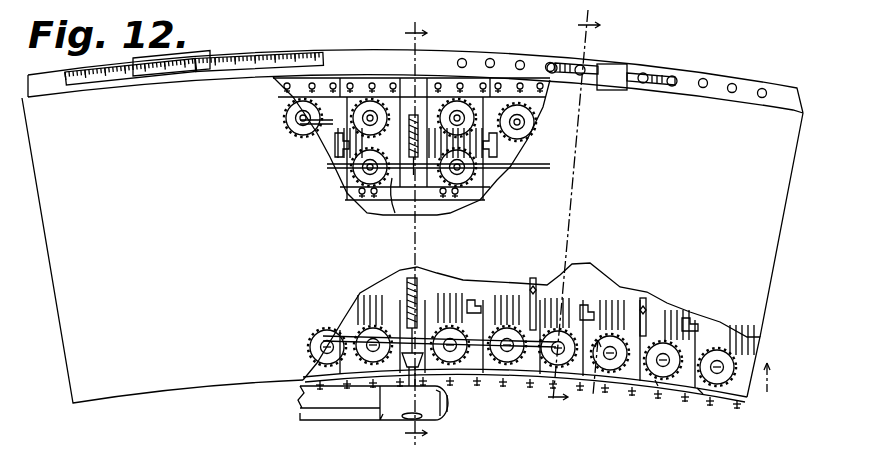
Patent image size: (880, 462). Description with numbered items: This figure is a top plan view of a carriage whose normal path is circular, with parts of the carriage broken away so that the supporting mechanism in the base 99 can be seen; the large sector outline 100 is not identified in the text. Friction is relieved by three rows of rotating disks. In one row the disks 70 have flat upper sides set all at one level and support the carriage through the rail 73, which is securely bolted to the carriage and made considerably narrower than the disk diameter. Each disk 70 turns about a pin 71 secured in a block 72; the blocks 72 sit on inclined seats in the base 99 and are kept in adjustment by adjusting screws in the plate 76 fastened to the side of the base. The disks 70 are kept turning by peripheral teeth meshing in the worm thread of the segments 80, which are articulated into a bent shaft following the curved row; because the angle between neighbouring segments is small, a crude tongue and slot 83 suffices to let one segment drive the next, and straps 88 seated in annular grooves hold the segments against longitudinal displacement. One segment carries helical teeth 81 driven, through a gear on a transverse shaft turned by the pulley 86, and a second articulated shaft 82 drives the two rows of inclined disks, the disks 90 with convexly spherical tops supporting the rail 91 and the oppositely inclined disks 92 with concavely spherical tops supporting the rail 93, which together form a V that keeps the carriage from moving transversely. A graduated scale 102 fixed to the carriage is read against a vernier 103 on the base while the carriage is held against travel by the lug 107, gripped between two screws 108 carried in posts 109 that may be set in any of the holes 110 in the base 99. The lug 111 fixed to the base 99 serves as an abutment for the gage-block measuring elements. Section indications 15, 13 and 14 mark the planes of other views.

The curved plate 100 is at (268, 376).
The base 99 is at (478, 52).
The holes 110 is at (740, 86).
The graduated scale 102 is at (321, 64).
The vernier 103 is at (212, 52).
The posts 109 is at (582, 66).
The lug 107 is at (613, 86).
The screws 108 is at (656, 74).
The second articulated shaft 82 is at (540, 147).
The disks 92 is at (302, 112).
The rail 93 is at (306, 123).
The disks 90 is at (326, 157).
The rail 91 is at (326, 169).
The helical teeth 81 is at (414, 158).
The blocks 72 is at (403, 210).
The section line 15- 15 is at (420, 231).
The section line 13- 13 is at (560, 215).
The section line 14- 14 is at (685, 401).
The disks 70 is at (364, 327).
The segments 80 is at (372, 300).
The rail 73 is at (336, 338).
The straps 88 is at (531, 285).
The tongue and slot 83 is at (590, 303).
The lug 111 is at (436, 370).
The pulley 86 is at (397, 419).
The pins 71 is at (663, 362).
The plate 76 is at (684, 410).